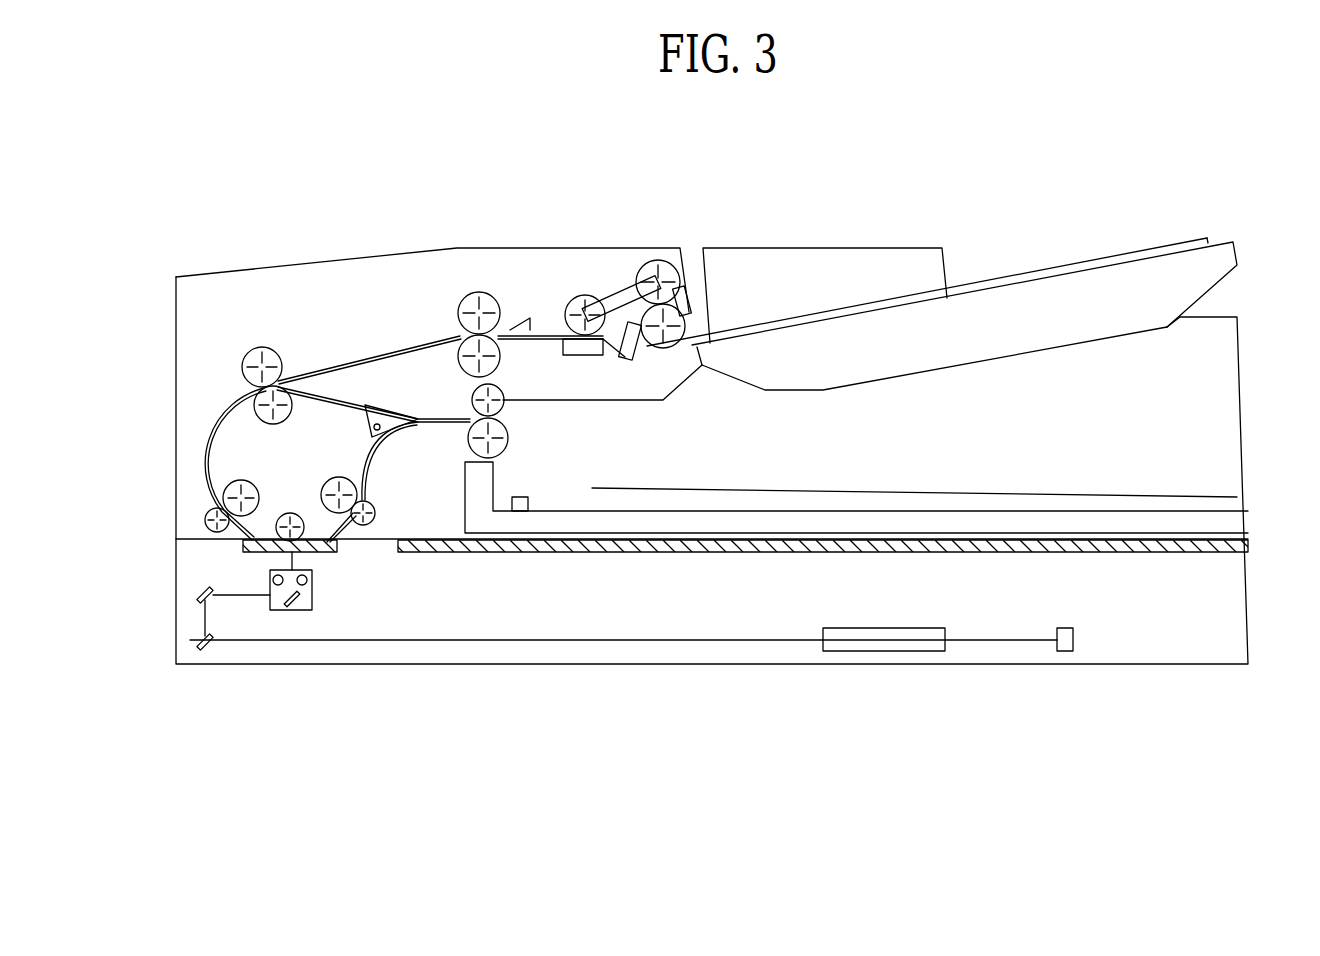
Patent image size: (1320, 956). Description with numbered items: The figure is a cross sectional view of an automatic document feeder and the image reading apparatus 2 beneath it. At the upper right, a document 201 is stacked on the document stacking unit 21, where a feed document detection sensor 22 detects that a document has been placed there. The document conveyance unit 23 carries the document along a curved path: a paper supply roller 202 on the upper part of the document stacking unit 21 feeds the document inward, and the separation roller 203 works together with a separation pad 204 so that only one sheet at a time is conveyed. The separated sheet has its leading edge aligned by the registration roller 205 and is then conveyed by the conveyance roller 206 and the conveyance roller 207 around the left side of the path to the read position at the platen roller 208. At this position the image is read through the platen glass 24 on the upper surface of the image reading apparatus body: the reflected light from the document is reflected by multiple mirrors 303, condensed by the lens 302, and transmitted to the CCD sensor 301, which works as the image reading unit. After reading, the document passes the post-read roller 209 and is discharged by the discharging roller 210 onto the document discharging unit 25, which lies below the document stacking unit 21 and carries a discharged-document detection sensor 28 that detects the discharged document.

The image reading apparatus 2 is at (314, 252).
The document stacking unit 21 is at (1224, 276).
The feed document detection sensor 22 is at (691, 290).
The document conveyance unit 23 is at (233, 391).
The platen glass 24 is at (335, 552).
The document discharging unit 25 is at (1238, 498).
The discharged-document detection sensor 28 is at (520, 496).
The document 201 is at (1050, 268).
The paper supply roller 202 is at (647, 262).
The separation roller 203 is at (580, 297).
The separation pad 204 is at (558, 338).
The registration roller 205 is at (459, 360).
The conveyance roller 206 is at (278, 352).
The conveyance roller 207 is at (228, 483).
The platen roller 208 is at (293, 513).
The post-read roller 209 is at (340, 477).
The discharging roller 210 is at (503, 405).
The CCD sensor 301 is at (1063, 652).
The lens 302 is at (880, 652).
The mirrors 303 is at (270, 585).